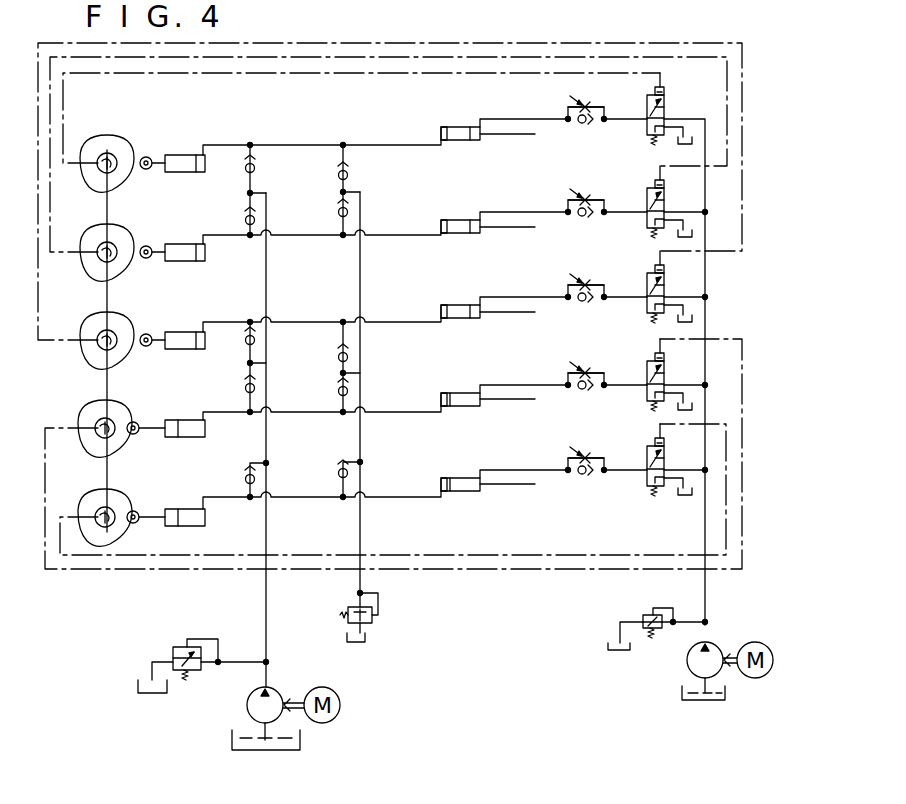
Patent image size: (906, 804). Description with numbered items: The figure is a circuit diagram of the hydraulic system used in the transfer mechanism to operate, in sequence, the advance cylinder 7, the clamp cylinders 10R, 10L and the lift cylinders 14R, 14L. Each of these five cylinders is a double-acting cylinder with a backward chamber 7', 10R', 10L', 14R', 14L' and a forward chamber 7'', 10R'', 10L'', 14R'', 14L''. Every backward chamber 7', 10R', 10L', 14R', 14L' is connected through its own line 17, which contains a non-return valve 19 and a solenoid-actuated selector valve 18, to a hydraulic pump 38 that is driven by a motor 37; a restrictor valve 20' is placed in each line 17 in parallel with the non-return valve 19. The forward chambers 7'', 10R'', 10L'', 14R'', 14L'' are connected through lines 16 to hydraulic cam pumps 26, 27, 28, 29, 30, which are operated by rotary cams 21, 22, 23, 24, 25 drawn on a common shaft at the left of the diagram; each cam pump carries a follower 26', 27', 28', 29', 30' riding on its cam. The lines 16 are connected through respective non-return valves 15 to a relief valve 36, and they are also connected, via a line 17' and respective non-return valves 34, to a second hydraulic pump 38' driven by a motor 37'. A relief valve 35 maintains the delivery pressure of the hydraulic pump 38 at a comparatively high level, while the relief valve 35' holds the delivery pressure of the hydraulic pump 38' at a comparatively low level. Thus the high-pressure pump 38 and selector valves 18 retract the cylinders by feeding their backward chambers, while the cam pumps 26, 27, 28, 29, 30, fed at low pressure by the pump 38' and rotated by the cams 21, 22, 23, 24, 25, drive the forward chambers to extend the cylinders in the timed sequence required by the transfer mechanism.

The advance cylinder 7 is at (460, 466).
The backward chamber 7' is at (506, 502).
The forward chamber 7'' is at (430, 470).
The clamp cylinder 10L is at (465, 290).
The backward chamber 10L' is at (508, 326).
The forward chamber 10L'' is at (420, 296).
The clamp cylinder 10R is at (466, 379).
The backward chamber 10R' is at (509, 414).
The forward chamber 10R'' is at (421, 385).
The lift cylinder 14L is at (466, 114).
The backward chamber 14L' is at (508, 150).
The forward chamber 14L'' is at (420, 119).
The lift cylinder 14R is at (468, 205).
The backward chamber 14R' is at (509, 241).
The forward chamber 14R'' is at (421, 210).
The non-return valve 15 is at (330, 182).
The line 16 is at (388, 151).
The line 17 is at (594, 357).
The line 17' is at (291, 440).
The solenoid-actuated selector valve 18 is at (664, 108).
The non-return valve 19 is at (578, 134).
The restrictor valve 20' is at (604, 267).
The rotary cam 21 is at (93, 510).
The rotary cam 22 is at (93, 419).
The rotary cam 23 is at (93, 329).
The rotary cam 24 is at (93, 245).
The rotary cam 25 is at (95, 157).
The hydraulic cam pump 26 is at (181, 499).
The cam follower roller 26' is at (139, 497).
The hydraulic cam pump 27 is at (181, 408).
The cam follower roller 27' is at (141, 406).
The hydraulic cam pump 28 is at (181, 319).
The cam follower roller 28' is at (143, 317).
The hydraulic cam pump 29 is at (181, 234).
The cam follower roller 29' is at (142, 232).
The hydraulic cam pump 30 is at (181, 144).
The cam follower roller 30' is at (142, 143).
The non-return valve 34 is at (240, 182).
The relief valve 35 is at (654, 618).
The relief valve 35' is at (202, 655).
The relief valve 36 is at (374, 620).
The motor 37 is at (749, 640).
The motor 37' is at (336, 705).
The hydraulic pump 38 is at (681, 671).
The hydraulic pump 38' is at (248, 718).